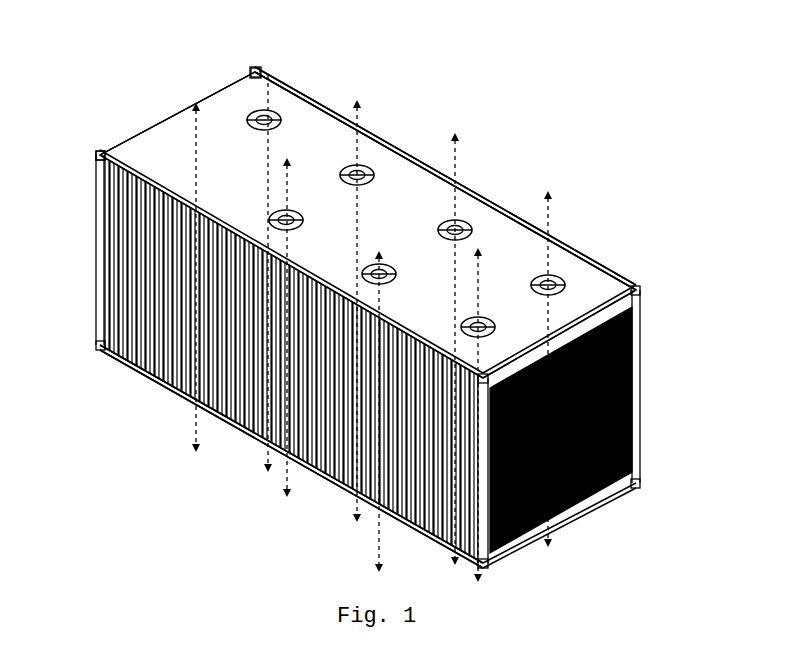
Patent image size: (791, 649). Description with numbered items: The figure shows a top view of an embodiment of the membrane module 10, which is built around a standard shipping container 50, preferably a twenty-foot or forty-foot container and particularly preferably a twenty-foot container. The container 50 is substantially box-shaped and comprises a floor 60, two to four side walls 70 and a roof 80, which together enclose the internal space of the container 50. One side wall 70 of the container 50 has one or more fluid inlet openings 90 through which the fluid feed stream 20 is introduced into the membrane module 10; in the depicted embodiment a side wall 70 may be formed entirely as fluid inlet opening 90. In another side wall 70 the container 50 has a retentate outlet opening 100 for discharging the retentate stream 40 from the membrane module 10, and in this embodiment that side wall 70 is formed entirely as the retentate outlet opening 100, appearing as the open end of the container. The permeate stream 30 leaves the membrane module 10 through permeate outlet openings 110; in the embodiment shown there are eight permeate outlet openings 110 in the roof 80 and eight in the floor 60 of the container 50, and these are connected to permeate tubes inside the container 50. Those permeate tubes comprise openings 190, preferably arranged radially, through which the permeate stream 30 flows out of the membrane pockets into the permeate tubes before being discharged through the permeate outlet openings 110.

The membrane module 10 is at (640, 155).
The fluid feed stream 20 is at (100, 255).
The permeate stream 30 is at (268, 68).
The retentate stream 40 is at (577, 462).
The container 50 is at (478, 195).
The floor 60 is at (158, 383).
The side wall 70 is at (318, 440).
The roof 80 is at (155, 160).
The fluid inlet opening 90 is at (120, 148).
The retentate outlet opening 100 is at (642, 345).
The permeate outlet opening 110 is at (585, 257).
The opening 190 is at (362, 172).